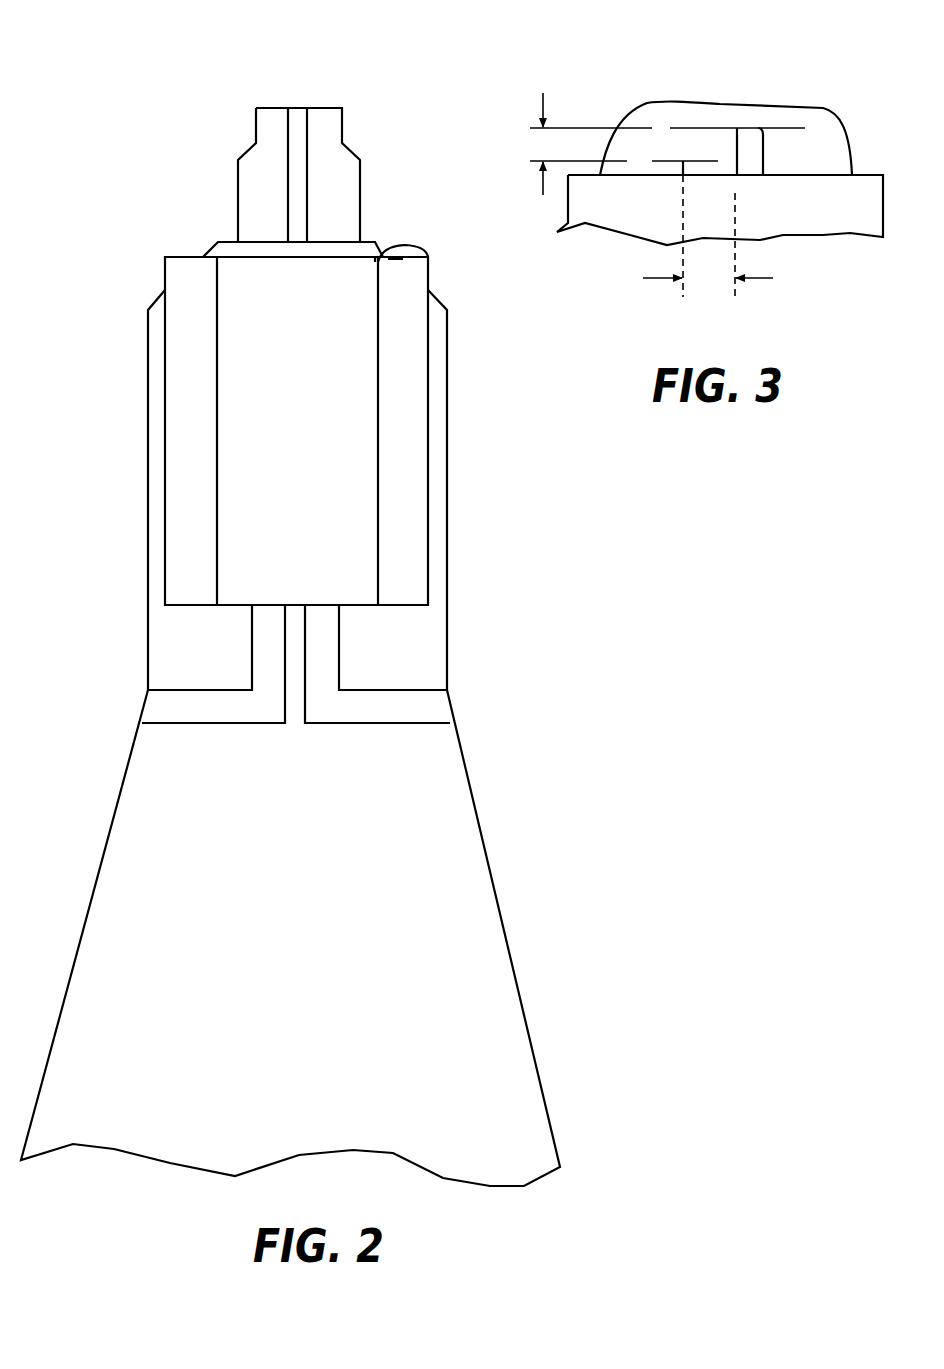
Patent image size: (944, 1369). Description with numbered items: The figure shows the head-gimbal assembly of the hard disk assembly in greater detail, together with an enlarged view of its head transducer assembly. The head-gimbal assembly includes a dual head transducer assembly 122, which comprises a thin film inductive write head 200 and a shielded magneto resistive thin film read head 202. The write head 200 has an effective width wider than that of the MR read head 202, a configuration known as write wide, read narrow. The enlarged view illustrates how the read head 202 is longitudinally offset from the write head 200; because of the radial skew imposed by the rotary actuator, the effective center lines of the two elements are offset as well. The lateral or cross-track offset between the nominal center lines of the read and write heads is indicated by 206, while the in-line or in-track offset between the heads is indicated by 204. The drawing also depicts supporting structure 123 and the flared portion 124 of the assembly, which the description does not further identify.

In FIG. 2, the dual head transducer assembly 122 is at (405, 232).
In FIG. 3, the dual head transducer assembly 122 is at (708, 78).
In FIG. 2, the connector body / plate 123 is at (177, 277).
In FIG. 3, the connector body / plate 123 is at (820, 227).
In FIG. 2, the flared strain relief 124 is at (481, 921).
In FIG. 2, the thin film inductive write head 200 is at (407, 248).
In FIG. 3, the thin film inductive write head 200 is at (765, 175).
In FIG. 2, the shielded magneto resistive thin film read head 202 is at (380, 262).
In FIG. 3, the shielded magneto resistive thin film read head 202 is at (667, 173).
In FIG. 3, the in-line offset 204 is at (545, 93).
In FIG. 3, the center line offset 206 is at (678, 280).